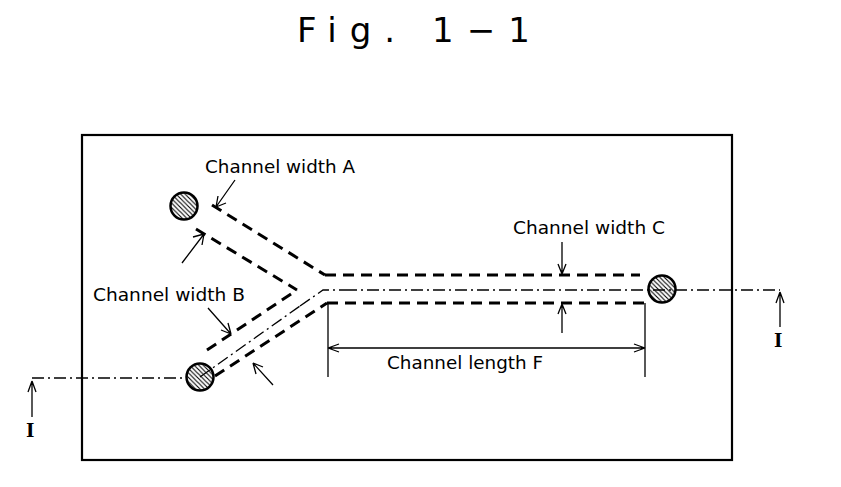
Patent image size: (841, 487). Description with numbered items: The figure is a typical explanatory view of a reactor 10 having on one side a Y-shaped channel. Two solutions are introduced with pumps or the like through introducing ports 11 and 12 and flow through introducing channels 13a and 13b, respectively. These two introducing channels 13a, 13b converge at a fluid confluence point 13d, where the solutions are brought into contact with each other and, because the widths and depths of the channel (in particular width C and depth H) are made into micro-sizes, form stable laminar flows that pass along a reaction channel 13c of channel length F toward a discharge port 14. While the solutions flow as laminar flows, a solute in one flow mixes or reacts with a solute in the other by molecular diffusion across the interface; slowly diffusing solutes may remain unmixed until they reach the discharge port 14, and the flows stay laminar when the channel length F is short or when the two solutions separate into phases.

The reactor 10 is at (602, 135).
The introducing port 11 is at (171, 204).
The introducing port 12 is at (187, 373).
The introducing channel 13a is at (260, 243).
The introducing channel 13b is at (273, 335).
The reaction channel 13c is at (430, 285).
The fluid confluence point 13d is at (320, 292).
The discharge port 14 is at (677, 279).